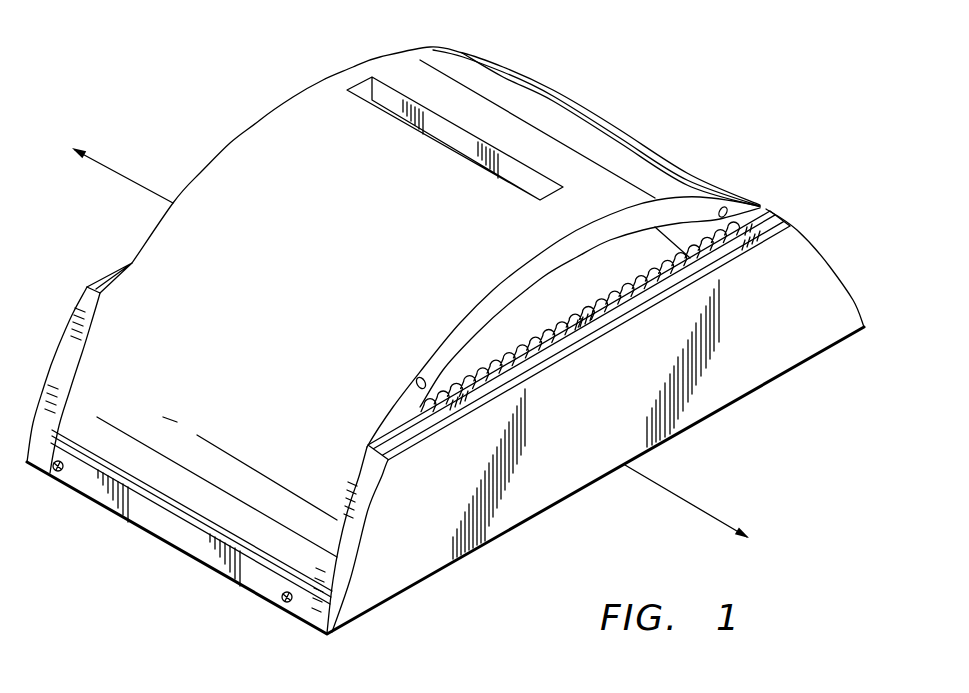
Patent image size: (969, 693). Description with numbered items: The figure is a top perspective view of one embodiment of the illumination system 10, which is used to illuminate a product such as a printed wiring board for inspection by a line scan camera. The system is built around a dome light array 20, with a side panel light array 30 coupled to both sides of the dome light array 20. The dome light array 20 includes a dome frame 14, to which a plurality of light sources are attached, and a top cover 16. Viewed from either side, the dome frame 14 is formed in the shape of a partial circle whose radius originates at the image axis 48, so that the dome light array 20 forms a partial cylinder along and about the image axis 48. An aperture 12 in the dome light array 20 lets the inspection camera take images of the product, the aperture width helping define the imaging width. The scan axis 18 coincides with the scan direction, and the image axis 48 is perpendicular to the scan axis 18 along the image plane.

The illumination system 10 is at (140, 42).
The aperture 12 is at (363, 88).
The dome frame 14 is at (630, 137).
The top cover 16 is at (298, 315).
The scan axis 18 is at (755, 212).
The dome light array 20 is at (577, 74).
The side panel light array 30 is at (412, 618).
The image axis 48 is at (108, 168).